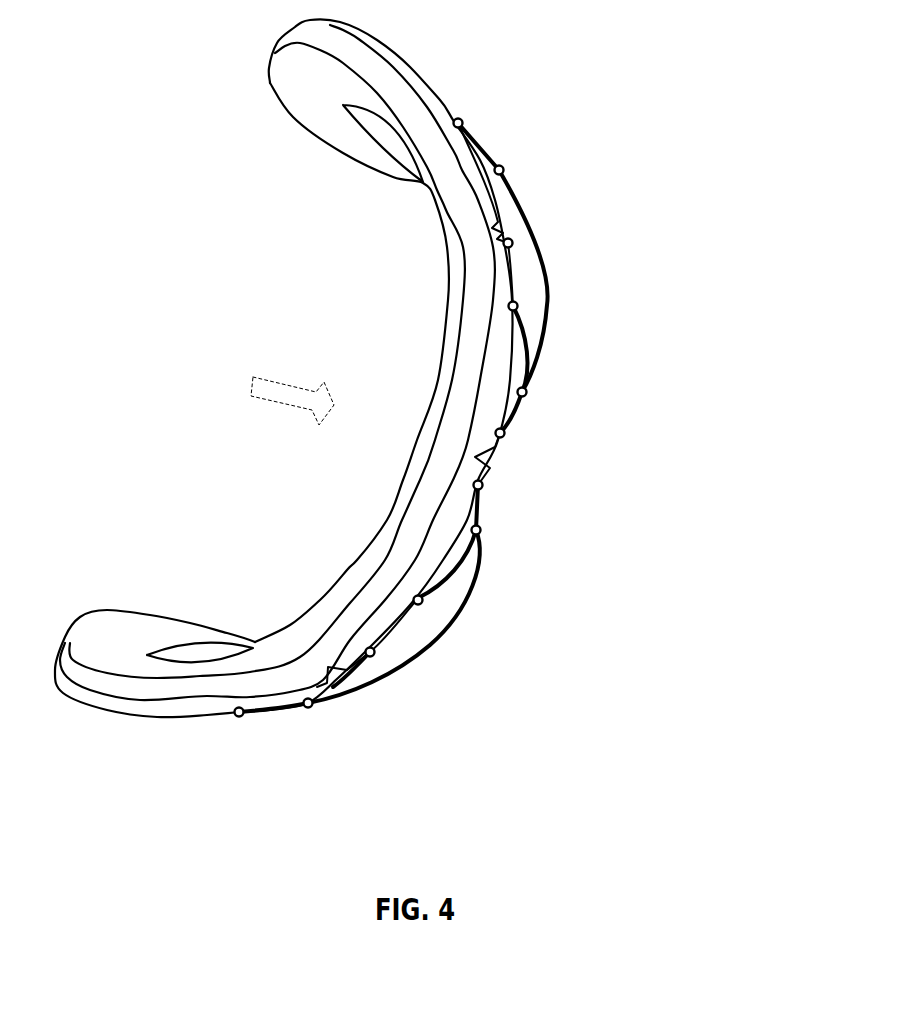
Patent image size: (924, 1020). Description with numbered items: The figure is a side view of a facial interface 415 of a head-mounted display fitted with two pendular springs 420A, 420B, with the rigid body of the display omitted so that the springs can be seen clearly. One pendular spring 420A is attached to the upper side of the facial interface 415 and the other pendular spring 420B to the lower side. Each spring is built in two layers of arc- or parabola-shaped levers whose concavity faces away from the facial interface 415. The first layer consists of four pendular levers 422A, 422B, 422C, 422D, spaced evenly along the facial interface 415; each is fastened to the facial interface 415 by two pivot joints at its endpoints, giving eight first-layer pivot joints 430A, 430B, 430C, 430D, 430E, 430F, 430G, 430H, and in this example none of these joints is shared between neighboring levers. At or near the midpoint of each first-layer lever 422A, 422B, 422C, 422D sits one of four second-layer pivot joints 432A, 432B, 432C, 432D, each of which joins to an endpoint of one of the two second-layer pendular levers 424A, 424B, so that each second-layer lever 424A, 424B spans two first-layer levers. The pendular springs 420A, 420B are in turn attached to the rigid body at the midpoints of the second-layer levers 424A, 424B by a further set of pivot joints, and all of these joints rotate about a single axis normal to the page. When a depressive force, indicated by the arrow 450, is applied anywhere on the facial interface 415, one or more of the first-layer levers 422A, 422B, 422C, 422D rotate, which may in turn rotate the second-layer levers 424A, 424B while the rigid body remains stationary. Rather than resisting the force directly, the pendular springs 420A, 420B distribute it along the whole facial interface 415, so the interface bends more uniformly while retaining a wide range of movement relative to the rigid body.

The facial interface 415 is at (352, 562).
The pendular spring 420A is at (703, 493).
The pendular spring 420B is at (695, 874).
The pendular lever 422A is at (485, 133).
The pendular lever 422B is at (522, 418).
The pendular lever 422C is at (487, 512).
The pendular lever 422D is at (285, 717).
The pendular lever 424A is at (548, 283).
The pendular lever 424B is at (450, 638).
The pivot joint 430A is at (462, 120).
The pivot joint 430B is at (514, 244).
The pivot joint 430C is at (518, 309).
The pivot joint 430D is at (508, 440).
The pivot joint 430E is at (489, 486).
The pivot joint 430F is at (430, 605).
The pivot joint 430G is at (380, 657).
The pivot joint 430H is at (230, 722).
The pivot joint 432A is at (504, 172).
The pivot joint 432B is at (527, 393).
The pivot joint 432C is at (487, 533).
The pivot joint 432D is at (313, 715).
The arrow 450 is at (276, 398).